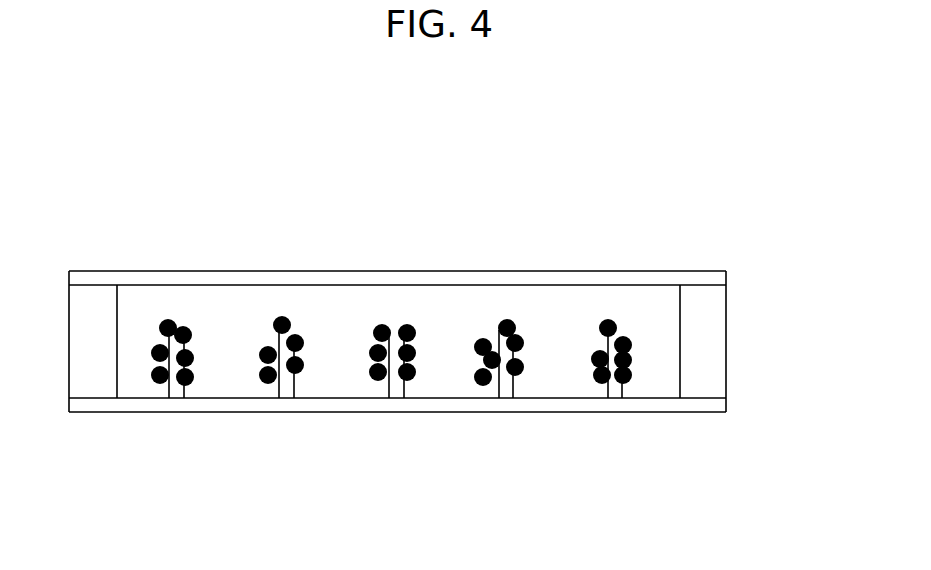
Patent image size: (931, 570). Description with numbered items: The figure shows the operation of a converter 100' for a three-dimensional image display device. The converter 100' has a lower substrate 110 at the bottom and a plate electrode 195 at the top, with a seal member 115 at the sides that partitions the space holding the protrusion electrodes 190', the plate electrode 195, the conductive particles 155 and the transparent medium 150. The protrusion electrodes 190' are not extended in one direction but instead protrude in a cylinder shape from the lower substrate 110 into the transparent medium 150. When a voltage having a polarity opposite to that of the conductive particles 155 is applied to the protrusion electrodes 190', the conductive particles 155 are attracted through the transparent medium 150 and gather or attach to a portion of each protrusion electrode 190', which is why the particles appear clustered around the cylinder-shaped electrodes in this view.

The converter 100' is at (397, 271).
The lower substrate 110 is at (718, 407).
The seal member 115 is at (711, 345).
The transparent medium 150 is at (558, 378).
The conductive particles 155 is at (479, 383).
The protrusion electrodes 190' is at (413, 409).
The plate electrode 195 is at (718, 284).